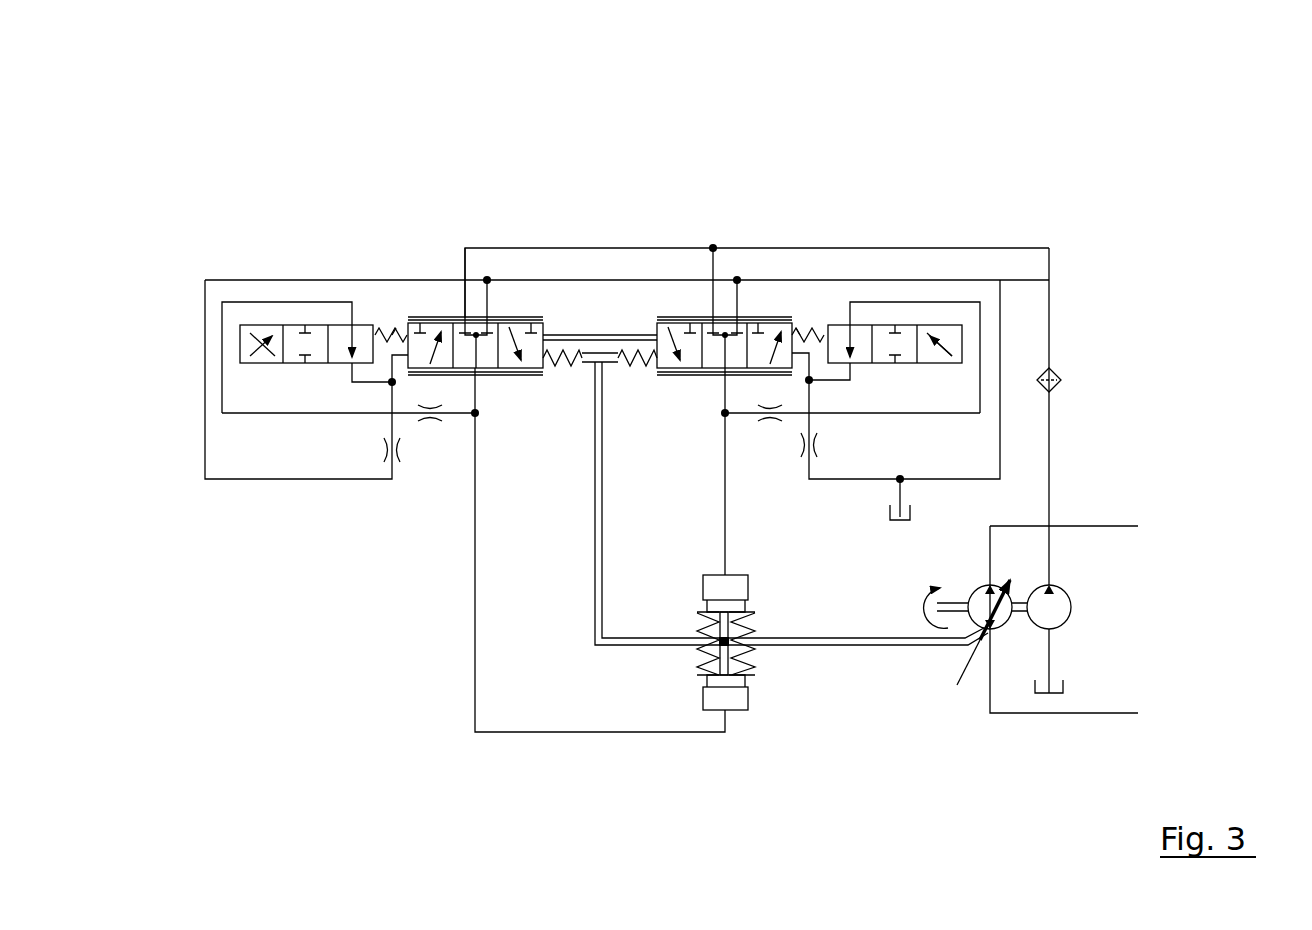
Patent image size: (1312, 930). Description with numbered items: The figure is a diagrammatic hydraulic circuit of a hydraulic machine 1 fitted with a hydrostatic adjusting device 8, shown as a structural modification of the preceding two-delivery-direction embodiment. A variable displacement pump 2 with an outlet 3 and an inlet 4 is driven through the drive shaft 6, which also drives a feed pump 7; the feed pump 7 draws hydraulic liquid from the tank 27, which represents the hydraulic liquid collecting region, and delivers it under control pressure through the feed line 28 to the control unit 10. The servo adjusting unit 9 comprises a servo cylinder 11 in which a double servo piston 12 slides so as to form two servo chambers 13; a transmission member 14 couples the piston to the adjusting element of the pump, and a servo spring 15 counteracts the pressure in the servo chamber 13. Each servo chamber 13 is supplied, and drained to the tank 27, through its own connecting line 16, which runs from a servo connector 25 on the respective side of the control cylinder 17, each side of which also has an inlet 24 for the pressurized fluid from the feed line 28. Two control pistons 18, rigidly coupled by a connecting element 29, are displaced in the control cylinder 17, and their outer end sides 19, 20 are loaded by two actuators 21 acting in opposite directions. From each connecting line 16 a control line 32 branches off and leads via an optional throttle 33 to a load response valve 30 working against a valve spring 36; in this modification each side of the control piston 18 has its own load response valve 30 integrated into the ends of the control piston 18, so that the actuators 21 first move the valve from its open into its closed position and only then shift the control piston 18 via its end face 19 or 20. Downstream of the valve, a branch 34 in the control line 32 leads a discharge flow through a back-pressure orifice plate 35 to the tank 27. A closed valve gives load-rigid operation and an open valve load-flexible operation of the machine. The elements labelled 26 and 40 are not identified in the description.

The hydraulic machine 1 is at (1180, 229).
The variable displacement pump 2 is at (996, 620).
The outlet 3 is at (992, 590).
The inlet 4 is at (952, 671).
The drive shaft 6 is at (955, 603).
The feed pump 7 is at (1058, 607).
The hydrostatic adjusting device 8 is at (342, 673).
The servo adjusting unit 9 is at (739, 659).
The control unit 10 is at (425, 296).
The servo cylinder 11 is at (703, 583).
The servo piston 12 is at (733, 618).
The servo chamber 13 is at (730, 592).
The transmission member 14 is at (870, 648).
The servo spring 15 is at (700, 655).
The connecting line 16 is at (475, 648).
The control cylinder 17 is at (665, 315).
The control piston 18 is at (675, 328).
The first end side 19 is at (395, 322).
The second end side 20 is at (800, 322).
The actuator 21 is at (240, 333).
The inlet 24 is at (465, 327).
The servo connector 25 is at (480, 372).
The pressure port 26 is at (488, 327).
The tank 27 is at (908, 512).
The feed line 28 is at (1049, 310).
The connecting element 29 is at (585, 330).
The load response valve 30 is at (300, 308).
The control line 32 is at (222, 378).
The throttle 33 is at (430, 421).
The branch 34 is at (320, 479).
The back-pressure orifice plate 35 is at (387, 462).
The valve spring 36 is at (388, 320).
The connecting line 40 is at (598, 570).